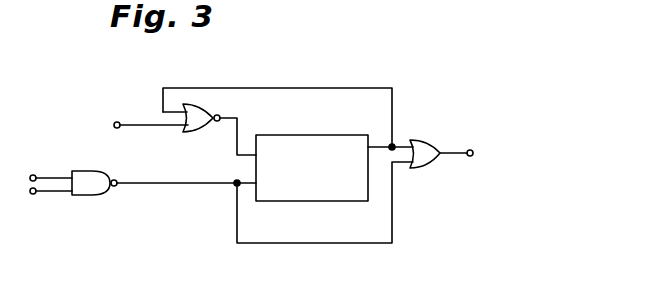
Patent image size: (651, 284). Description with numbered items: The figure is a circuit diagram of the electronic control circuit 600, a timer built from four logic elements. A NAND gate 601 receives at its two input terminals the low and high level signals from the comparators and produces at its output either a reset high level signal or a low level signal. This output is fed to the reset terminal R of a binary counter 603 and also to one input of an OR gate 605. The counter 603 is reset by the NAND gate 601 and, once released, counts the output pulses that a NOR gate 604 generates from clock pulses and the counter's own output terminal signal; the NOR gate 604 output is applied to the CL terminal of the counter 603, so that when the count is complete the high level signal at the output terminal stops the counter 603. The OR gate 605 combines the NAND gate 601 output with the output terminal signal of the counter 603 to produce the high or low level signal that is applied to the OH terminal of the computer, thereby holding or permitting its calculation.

The electronic control circuit 600 is at (353, 79).
The NAND gate 601 is at (93, 194).
The binary counter 603 is at (323, 135).
The NOR gate 604 is at (190, 130).
The OR gate 605 is at (425, 140).